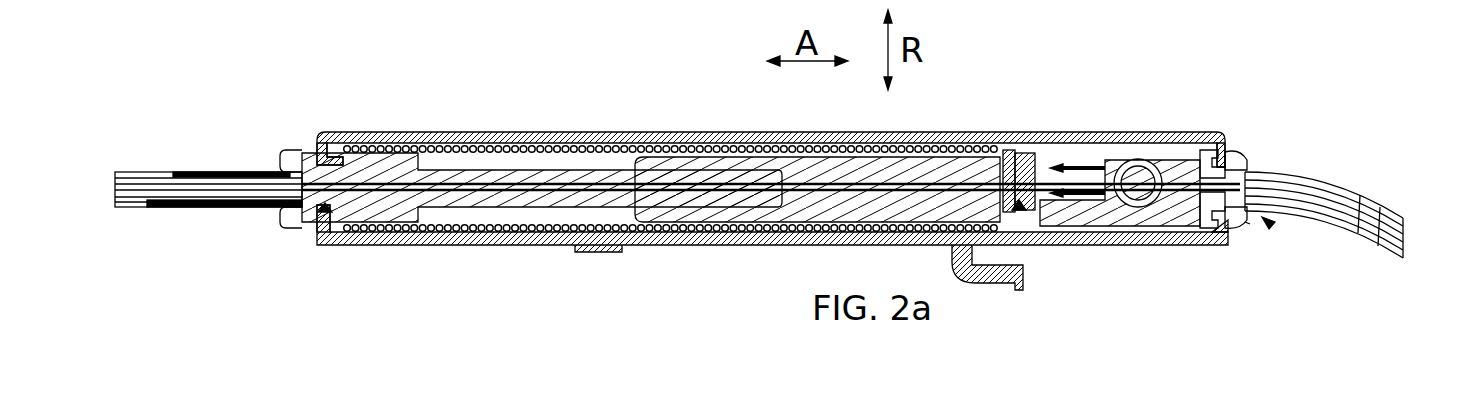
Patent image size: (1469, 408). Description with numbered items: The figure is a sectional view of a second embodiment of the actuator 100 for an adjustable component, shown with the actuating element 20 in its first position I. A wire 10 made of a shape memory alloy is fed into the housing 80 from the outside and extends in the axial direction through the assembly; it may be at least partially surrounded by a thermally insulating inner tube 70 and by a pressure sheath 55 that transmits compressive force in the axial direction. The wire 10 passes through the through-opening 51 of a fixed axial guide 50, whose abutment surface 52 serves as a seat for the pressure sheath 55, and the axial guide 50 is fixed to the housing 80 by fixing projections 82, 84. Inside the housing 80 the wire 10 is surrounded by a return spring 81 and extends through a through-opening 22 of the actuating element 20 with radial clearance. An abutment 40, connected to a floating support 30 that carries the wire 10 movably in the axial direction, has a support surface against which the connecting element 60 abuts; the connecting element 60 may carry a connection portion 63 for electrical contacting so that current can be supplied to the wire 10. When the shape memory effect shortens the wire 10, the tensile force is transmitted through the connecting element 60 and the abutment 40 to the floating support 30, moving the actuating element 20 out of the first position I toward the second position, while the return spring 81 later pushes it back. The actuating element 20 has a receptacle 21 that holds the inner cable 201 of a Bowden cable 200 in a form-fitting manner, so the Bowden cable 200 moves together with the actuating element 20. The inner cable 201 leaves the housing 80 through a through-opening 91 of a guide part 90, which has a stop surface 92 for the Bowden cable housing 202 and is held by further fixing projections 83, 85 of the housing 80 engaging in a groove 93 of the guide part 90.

The wire 10 is at (150, 195).
The actuating element 20 is at (1107, 217).
The receptacle 21 is at (1143, 207).
The through-opening 22 is at (1018, 160).
The floating support 30 is at (1055, 168).
The abutment 40 is at (1023, 208).
The axial guide 50 is at (333, 227).
The through-opening 51 is at (297, 217).
The abutment surface 52 is at (292, 160).
The pressure sheath 55 is at (177, 175).
The connecting element 60 is at (1033, 162).
The connection portion 63 is at (1085, 183).
The inner tube 70 is at (228, 207).
The housing 80 is at (493, 133).
The return spring 81 is at (548, 245).
The fixing projection 82 is at (317, 157).
The fixing projection 83 is at (1222, 148).
The fixing projection 84 is at (320, 233).
The fixing projection 85 is at (1213, 232).
The guide part 90 is at (1272, 225).
The through-opening 91 is at (1245, 222).
The stop surface 92 is at (1255, 160).
The groove 93 is at (1233, 233).
The actuator 100 is at (772, 172).
The Bowden cable 200 is at (1318, 165).
The inner cable 201 is at (1195, 152).
The Bowden cable housing 202 is at (1383, 200).
The first position I is at (682, 165).